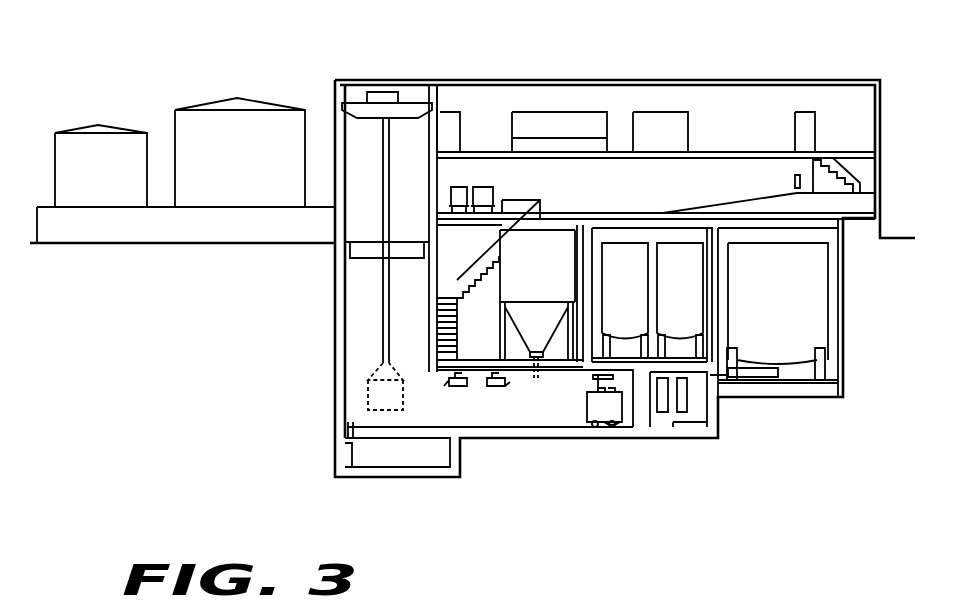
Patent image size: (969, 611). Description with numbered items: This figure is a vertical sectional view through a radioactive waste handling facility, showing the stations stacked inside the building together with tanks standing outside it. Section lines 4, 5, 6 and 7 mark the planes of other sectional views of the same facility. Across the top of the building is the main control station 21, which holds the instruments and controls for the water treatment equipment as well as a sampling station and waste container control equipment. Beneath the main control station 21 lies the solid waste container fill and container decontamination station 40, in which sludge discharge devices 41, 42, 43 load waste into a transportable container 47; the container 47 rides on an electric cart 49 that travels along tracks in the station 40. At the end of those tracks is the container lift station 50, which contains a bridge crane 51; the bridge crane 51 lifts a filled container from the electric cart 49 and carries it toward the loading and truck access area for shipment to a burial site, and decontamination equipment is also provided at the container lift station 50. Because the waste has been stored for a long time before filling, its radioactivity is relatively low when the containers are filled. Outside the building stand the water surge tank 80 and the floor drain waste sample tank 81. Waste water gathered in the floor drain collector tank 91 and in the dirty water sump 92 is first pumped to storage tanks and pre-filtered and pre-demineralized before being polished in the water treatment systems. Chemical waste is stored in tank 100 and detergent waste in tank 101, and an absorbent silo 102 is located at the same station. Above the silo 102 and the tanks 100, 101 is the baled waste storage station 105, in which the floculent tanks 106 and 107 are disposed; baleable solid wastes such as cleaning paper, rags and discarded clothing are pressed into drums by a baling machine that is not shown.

The section line 4- 4 is at (912, 145).
The section line 5- 5 is at (903, 368).
The section line 6- 6 is at (705, 555).
The section line 7- 7 is at (419, 522).
The main control station 21 is at (786, 114).
The solid waste container fill and container decontamination station 40 is at (578, 418).
The sludge discharge device 41 is at (453, 377).
The sludge discharge device 42 is at (493, 381).
The sludge discharge device 43 is at (597, 382).
The transportable container 47 is at (600, 413).
The electric cart 49 is at (373, 392).
The container lift station 50 is at (358, 343).
The bridge crane 51 is at (388, 168).
The water surge tank 80 is at (256, 161).
The floor drain waste sample tank 81 is at (114, 180).
The floor drain collector tank 91 is at (788, 328).
The dirty water sump 92 is at (343, 453).
The chemical waste tank 100 is at (697, 307).
The detergent waste tank 101 is at (641, 307).
The absorbent silo 102 is at (555, 281).
The baled waste storage station 105 is at (795, 182).
The floculent tank 106 is at (464, 181).
The floculent tank 107 is at (489, 192).